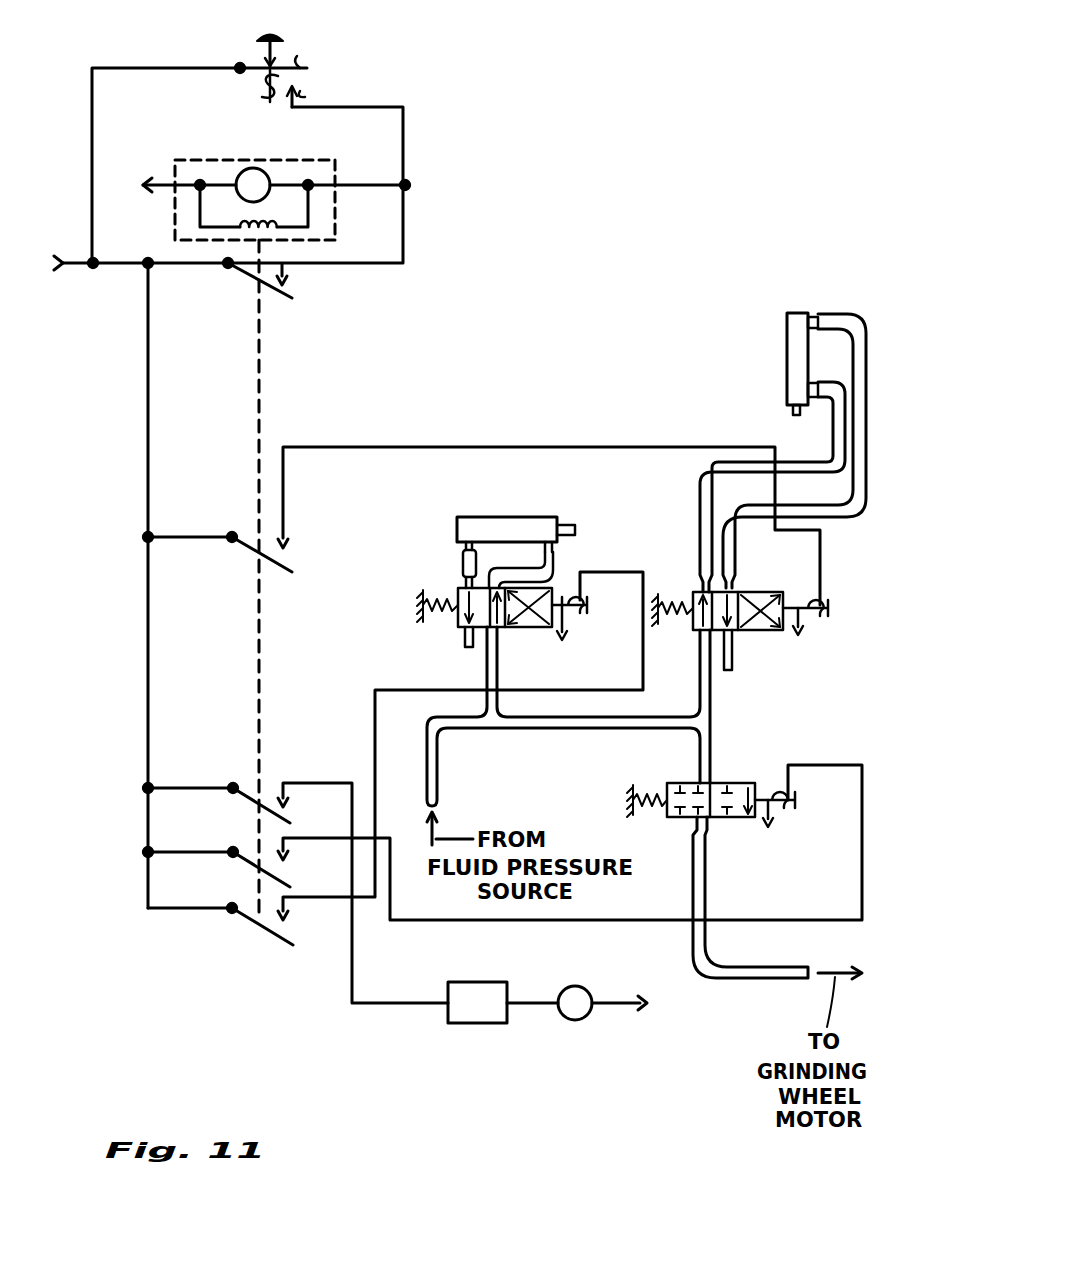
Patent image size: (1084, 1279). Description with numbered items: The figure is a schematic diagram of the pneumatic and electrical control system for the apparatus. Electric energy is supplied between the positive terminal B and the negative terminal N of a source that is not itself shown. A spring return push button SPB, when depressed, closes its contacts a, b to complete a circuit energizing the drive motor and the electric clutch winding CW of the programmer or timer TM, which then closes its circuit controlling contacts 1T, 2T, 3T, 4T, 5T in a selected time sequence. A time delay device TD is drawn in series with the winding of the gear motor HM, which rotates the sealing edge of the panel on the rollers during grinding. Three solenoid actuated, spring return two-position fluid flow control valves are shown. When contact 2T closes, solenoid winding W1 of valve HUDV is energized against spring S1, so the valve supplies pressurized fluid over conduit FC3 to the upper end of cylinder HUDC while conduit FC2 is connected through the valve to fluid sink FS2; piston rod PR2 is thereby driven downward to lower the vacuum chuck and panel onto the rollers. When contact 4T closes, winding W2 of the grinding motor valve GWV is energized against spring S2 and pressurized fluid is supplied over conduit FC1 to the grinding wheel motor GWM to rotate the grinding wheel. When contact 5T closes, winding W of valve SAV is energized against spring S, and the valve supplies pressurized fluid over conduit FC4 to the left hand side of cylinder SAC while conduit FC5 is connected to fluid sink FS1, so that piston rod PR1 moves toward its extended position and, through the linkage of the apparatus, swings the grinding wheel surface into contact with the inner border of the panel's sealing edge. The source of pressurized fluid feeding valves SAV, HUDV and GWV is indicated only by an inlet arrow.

The push button SPB is at (270, 53).
The push button contact a is at (310, 54).
The push button contact b is at (307, 94).
The timer TM is at (208, 160).
The clutch winding CW is at (200, 226).
The negative terminal N is at (460, 595).
The positive terminal B is at (140, 170).
The timer contact 1T is at (254, 283).
The timer contact 2T is at (250, 549).
The timer contact 3T is at (250, 800).
The timer contact 4T is at (248, 863).
The timer contact 5T is at (248, 924).
The time delay TD is at (477, 1002).
The gear motor HM is at (586, 1020).
The cylinder SAC is at (503, 517).
The piston rod PR1 is at (574, 526).
The conduit FC4 is at (463, 556).
The spring S is at (443, 598).
The fluid sink FS1 is at (480, 652).
The fluid flow control valve SAV is at (531, 630).
The conduit FC5 is at (535, 580).
The solenoid winding W is at (582, 608).
The cylinder HUDC is at (795, 313).
The conduit FC3 is at (867, 345).
The piston rod PR2 is at (790, 411).
The conduit FC2 is at (833, 441).
The spring S1 is at (678, 595).
The fluid flow control valve HUDV is at (760, 590).
The solenoid winding W1 is at (816, 614).
The fluid sink FS2 is at (712, 672).
The grinding motor valve GWV is at (737, 782).
The solenoid winding W2 is at (773, 793).
The spring S2 is at (647, 818).
The conduit FC1 is at (745, 980).
The grinding wheel motor GWM is at (820, 1143).